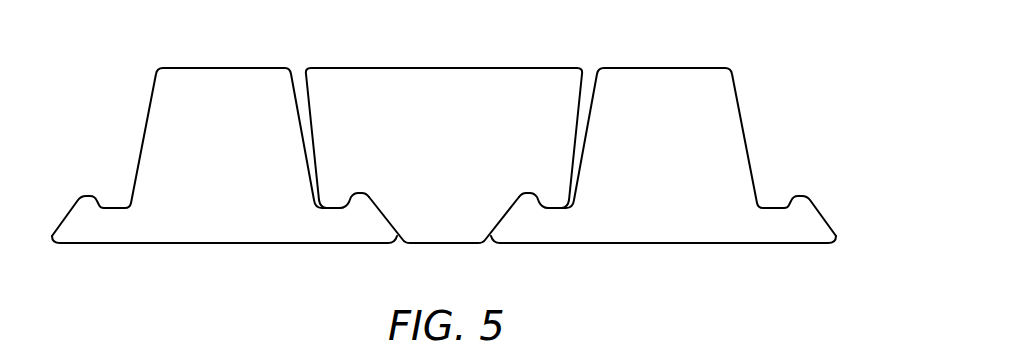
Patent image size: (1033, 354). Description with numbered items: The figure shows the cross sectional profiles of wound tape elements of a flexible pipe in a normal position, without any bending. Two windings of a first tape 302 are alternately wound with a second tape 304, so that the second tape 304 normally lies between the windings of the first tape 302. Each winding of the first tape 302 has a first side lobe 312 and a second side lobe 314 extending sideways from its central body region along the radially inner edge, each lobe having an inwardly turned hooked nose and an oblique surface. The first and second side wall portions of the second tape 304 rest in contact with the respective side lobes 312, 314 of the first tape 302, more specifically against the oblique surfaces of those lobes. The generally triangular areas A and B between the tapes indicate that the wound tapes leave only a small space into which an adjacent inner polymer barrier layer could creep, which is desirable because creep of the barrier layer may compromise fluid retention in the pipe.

The first tape 302 is at (665, 68).
The second tape 304 is at (444, 68).
The first side lobe 312 is at (518, 232).
The second side lobe 314 is at (810, 230).
The generally triangular area A is at (400, 234).
The generally triangular area B is at (489, 234).